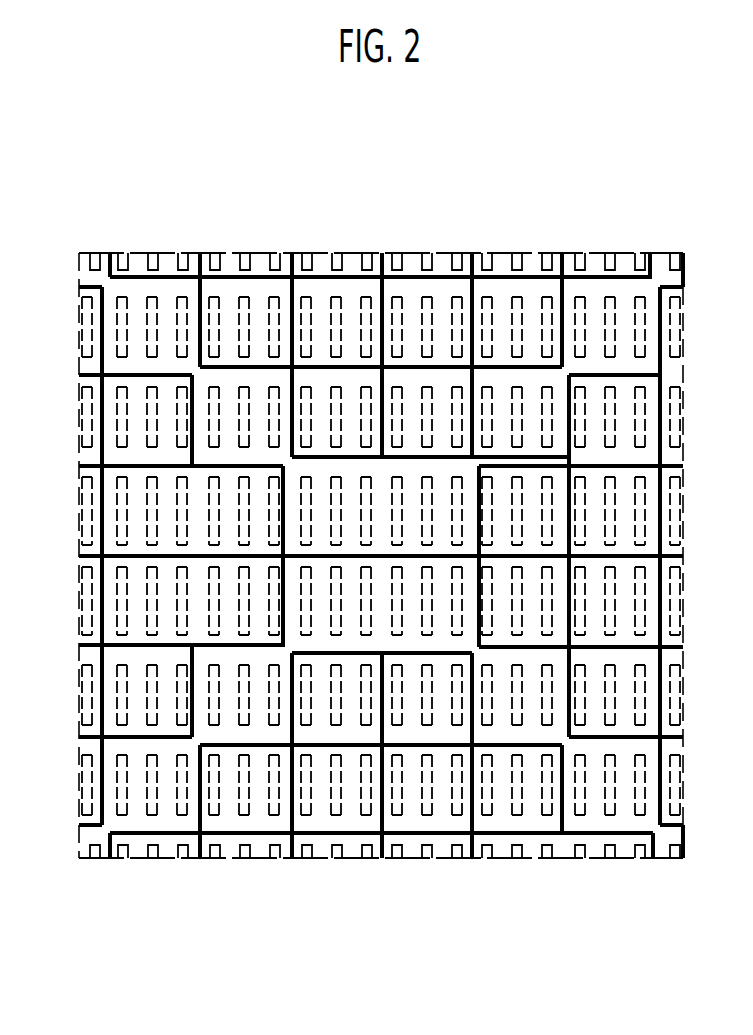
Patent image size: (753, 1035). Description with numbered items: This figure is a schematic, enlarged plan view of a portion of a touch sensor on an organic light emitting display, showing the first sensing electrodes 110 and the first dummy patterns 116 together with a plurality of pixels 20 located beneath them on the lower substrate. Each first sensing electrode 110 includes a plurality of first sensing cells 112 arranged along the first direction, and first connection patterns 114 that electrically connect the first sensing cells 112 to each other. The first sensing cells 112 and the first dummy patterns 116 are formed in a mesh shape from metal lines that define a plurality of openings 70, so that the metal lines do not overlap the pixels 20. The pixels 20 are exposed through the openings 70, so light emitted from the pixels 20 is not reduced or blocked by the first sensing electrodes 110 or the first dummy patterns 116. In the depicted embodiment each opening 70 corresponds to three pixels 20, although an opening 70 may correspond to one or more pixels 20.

The pixel 20 is at (338, 297).
The opening 70 is at (531, 303).
The first dummy pattern 116 is at (576, 285).
The first sensing electrode 110 is at (381, 761).
The first sensing cell 112 is at (228, 880).
The first connection pattern 114 is at (332, 913).